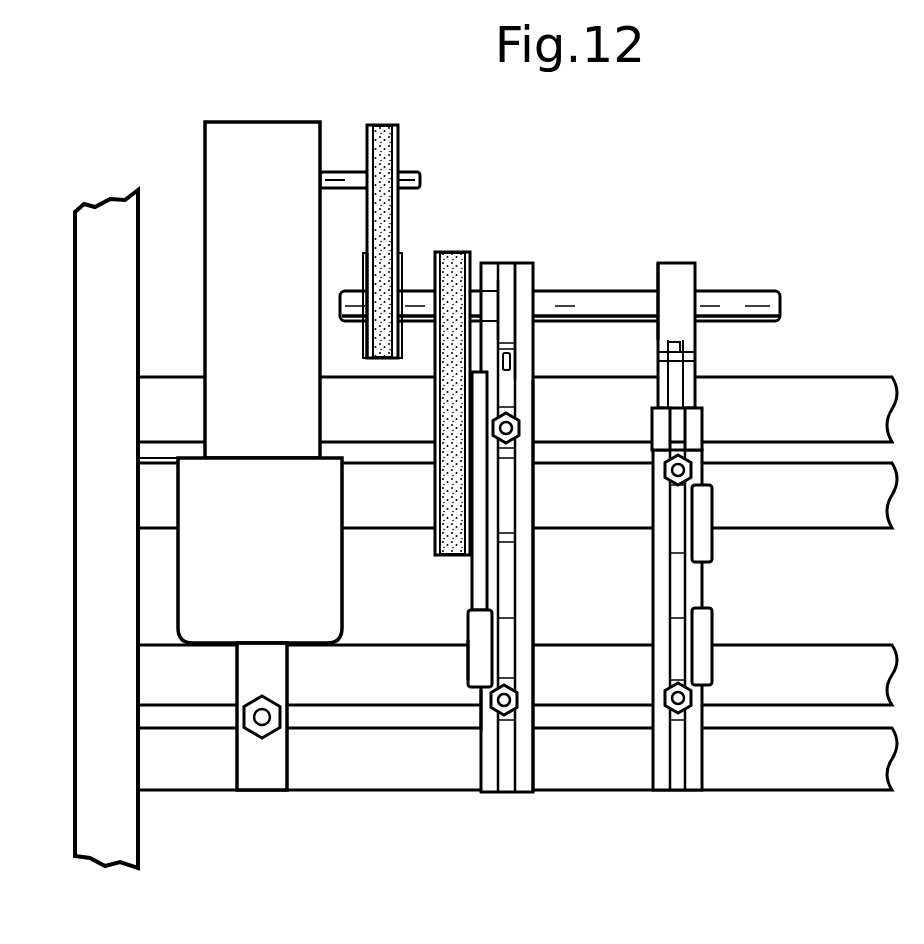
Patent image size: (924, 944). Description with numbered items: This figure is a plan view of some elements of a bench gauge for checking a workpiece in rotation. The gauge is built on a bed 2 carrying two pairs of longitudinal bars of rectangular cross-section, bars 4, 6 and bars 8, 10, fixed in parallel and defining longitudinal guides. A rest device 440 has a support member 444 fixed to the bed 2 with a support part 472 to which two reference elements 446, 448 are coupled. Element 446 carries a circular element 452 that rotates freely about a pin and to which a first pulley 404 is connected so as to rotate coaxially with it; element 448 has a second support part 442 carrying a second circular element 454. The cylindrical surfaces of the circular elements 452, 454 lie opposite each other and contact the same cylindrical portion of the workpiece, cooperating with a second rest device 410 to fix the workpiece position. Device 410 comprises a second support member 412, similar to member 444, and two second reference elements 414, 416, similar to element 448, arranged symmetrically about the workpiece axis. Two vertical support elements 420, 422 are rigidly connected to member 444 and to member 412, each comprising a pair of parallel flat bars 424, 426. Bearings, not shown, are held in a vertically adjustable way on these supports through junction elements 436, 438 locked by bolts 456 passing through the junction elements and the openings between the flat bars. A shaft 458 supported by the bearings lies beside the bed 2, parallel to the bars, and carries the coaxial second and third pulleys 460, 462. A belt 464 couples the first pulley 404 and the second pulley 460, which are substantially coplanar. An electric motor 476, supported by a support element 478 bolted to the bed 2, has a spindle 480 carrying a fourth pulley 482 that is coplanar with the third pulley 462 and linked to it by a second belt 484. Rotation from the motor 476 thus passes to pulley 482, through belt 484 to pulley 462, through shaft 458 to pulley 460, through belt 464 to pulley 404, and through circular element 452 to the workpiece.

The bed 2 is at (58, 305).
The longitudinal bar 4 is at (193, 396).
The longitudinal bar 6 is at (150, 488).
The longitudinal bar 8 is at (305, 684).
The longitudinal bar 10 is at (325, 775).
The first pulley 404 is at (440, 532).
The second rest device 410 is at (714, 576).
The second support member 412 is at (705, 422).
The second reference element 414 is at (720, 501).
The second reference element 416 is at (717, 665).
The vertical support element 420 is at (512, 262).
The vertical support element 422 is at (697, 261).
The longitudinal parallel flat bars 424 is at (513, 357).
The longitudinal parallel flat bars 426 is at (665, 358).
The junction element 436 is at (508, 317).
The junction element 438 is at (672, 265).
The rest device 440 is at (542, 586).
The second support part 442 is at (485, 713).
The support member 444 is at (542, 678).
The reference element 446 is at (549, 432).
The reference element 448 is at (462, 668).
The circular element 452 is at (478, 590).
The second circular element 454 is at (472, 655).
The bolts 456 is at (683, 342).
The shaft 458 is at (558, 300).
The second pulley 460 is at (472, 258).
The third pulley 462 is at (365, 278).
The belt 464 is at (449, 262).
The support part 472 is at (526, 275).
The electric motor 476 is at (235, 595).
The support element 478 is at (245, 780).
The spindle 480 is at (340, 188).
The fourth pulley 482 is at (400, 152).
The second belt 484 is at (380, 125).